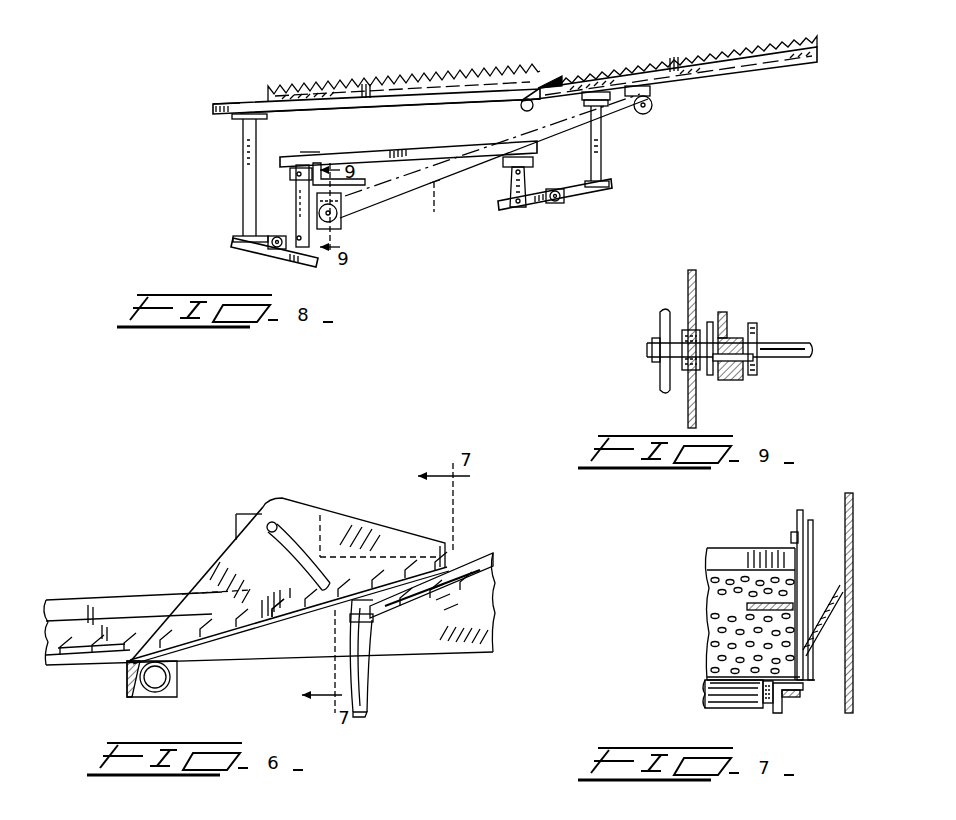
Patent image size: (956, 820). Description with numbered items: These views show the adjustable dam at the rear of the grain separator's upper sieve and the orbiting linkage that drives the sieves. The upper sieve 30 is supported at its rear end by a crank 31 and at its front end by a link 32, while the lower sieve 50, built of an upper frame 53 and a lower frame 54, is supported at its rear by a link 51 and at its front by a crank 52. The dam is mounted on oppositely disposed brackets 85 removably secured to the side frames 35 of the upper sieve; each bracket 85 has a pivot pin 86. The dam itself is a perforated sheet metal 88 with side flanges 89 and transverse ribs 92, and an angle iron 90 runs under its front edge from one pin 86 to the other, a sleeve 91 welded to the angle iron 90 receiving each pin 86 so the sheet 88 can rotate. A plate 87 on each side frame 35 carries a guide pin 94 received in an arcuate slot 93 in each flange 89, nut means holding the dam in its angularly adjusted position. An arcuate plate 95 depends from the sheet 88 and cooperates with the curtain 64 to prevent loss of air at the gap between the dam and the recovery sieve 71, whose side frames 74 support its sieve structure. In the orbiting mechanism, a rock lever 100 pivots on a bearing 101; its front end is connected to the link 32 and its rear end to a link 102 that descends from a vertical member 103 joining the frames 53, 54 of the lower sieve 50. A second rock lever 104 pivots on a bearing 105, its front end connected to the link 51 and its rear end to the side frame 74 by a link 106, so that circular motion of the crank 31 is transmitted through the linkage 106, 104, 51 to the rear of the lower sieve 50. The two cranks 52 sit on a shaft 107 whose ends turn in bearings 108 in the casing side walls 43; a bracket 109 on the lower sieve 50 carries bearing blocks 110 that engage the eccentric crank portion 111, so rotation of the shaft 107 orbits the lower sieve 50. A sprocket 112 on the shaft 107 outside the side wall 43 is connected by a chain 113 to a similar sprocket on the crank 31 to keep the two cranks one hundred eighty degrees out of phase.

In FIG. 8, the upper sieve 30 is at (485, 60).
In FIG. 6, the upper sieve 30 is at (135, 592).
In FIG. 8, the crank 31 is at (656, 104).
In FIG. 8, the link 32 is at (244, 186).
In FIG. 8, the side frame 35 is at (352, 102).
In FIG. 6, the side frame 35 is at (52, 630).
In FIG. 7, the side frame 35 is at (813, 672).
In FIG. 9, the side wall 43 is at (690, 298).
In FIG. 8, the lower sieve 50 is at (316, 148).
In FIG. 8, the link 51 is at (338, 218).
In FIG. 9, the crank 52 is at (765, 317).
In FIG. 8, the upper frame 53 is at (420, 150).
In FIG. 8, the lower frame 54 is at (363, 178).
In FIG. 6, the curtain 64 is at (372, 666).
In FIG. 8, the recovery sieve 71 is at (668, 46).
In FIG. 6, the recovery sieve 71 is at (497, 552).
In FIG. 6, the side frame 74 is at (496, 594).
In FIG. 7, the bracket 85 is at (784, 704).
In FIG. 6, the pivot pin 86 is at (160, 688).
In FIG. 7, the pivot pin 86 is at (767, 704).
In FIG. 6, the plate 87 is at (248, 508).
In FIG. 7, the plate 87 is at (814, 560).
In FIG. 6, the perforated sheet metal 88 is at (289, 601).
In FIG. 7, the perforated sheet metal 88 is at (712, 636).
In FIG. 6, the side flange 89 is at (384, 534).
In FIG. 7, the side flange 89 is at (800, 510).
In FIG. 6, the angle iron 90 is at (130, 683).
In FIG. 7, the angle iron 90 is at (705, 683).
In FIG. 6, the sleeve 91 is at (170, 680).
In FIG. 7, the sleeve 91 is at (728, 700).
In FIG. 6, the transverse rib 92 is at (284, 596).
In FIG. 7, the transverse rib 92 is at (708, 566).
In FIG. 6, the arcuate slot 93 is at (298, 540).
In FIG. 6, the guide pin 94 is at (278, 522).
In FIG. 7, the guide pin 94 is at (790, 535).
In FIG. 6, the arcuate plate 95 is at (358, 718).
In FIG. 7, the arcuate plate 95 is at (747, 606).
In FIG. 8, the rock lever 100 is at (270, 252).
In FIG. 8, the bearing 101 is at (272, 236).
In FIG. 8, the link 102 is at (298, 208).
In FIG. 8, the vertical member 103 is at (307, 164).
In FIG. 8, the second rock lever 104 is at (578, 198).
In FIG. 8, the bearing 105 is at (556, 203).
In FIG. 8, the link 106 is at (603, 156).
In FIG. 9, the shaft 107 is at (790, 345).
In FIG. 9, the bearing 108 is at (688, 372).
In FIG. 9, the bracket 109 is at (723, 316).
In FIG. 9, the bearing block 110 is at (738, 378).
In FIG. 9, the eccentric crank portion 111 is at (730, 382).
In FIG. 9, the sprocket 112 is at (662, 314).
In FIG. 8, the chain 113 is at (494, 161).